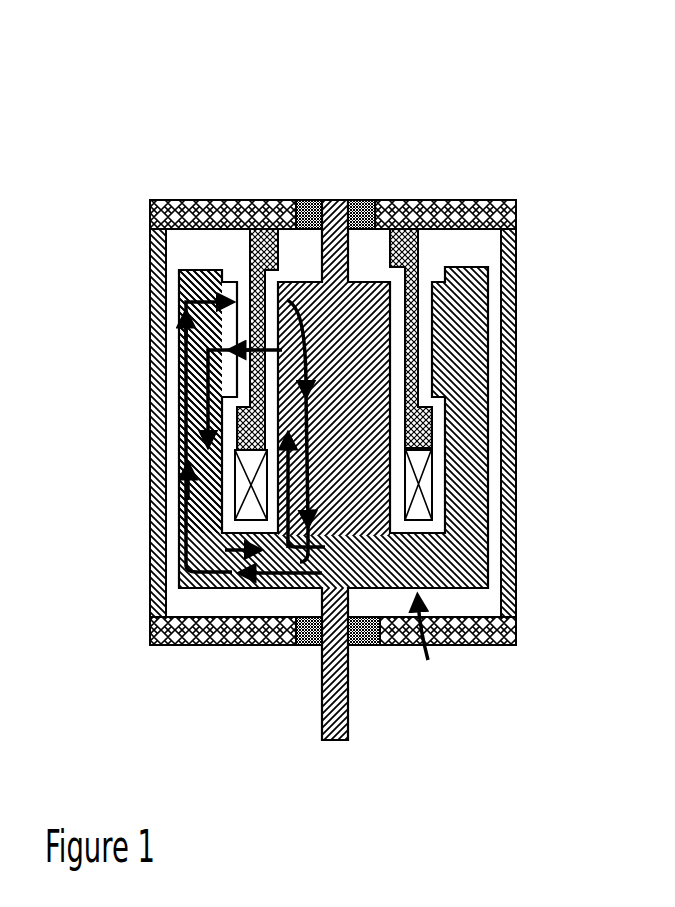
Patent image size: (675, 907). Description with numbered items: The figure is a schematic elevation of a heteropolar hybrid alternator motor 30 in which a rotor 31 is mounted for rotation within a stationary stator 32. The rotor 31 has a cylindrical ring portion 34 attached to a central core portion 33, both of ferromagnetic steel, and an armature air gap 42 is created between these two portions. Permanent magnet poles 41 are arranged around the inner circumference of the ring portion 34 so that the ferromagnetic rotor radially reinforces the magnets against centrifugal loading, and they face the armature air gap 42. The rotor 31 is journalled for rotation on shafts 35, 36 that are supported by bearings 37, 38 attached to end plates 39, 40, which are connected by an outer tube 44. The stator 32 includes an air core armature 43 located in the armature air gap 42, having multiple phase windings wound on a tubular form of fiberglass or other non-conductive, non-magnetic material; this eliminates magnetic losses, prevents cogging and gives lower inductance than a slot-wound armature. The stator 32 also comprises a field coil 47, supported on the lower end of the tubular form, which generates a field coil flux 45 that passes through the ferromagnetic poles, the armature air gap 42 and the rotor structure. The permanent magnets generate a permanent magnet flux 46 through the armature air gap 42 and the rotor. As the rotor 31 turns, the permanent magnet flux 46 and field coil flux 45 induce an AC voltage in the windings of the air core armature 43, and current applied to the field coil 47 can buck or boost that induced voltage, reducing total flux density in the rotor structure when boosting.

The heteropolar hybrid alternator motor 30 is at (155, 62).
The rotor 31 is at (415, 648).
The stator 32 is at (462, 190).
The central core portion 33 is at (245, 590).
The cylindrical ring portion 34 is at (490, 540).
The shaft 35 is at (335, 200).
The shaft 36 is at (345, 742).
The bearing 37 is at (368, 200).
The bearing 38 is at (368, 648).
The end plate 39 is at (172, 200).
The end plate 40 is at (517, 630).
The permanent magnet pole 41 is at (437, 282).
The armature air gap 42 is at (238, 283).
The air core armature 43 is at (427, 240).
The outer tube 44 is at (516, 368).
The field coil flux 45 is at (233, 540).
The permanent magnet flux 46 is at (197, 527).
The field coil 47 is at (430, 473).